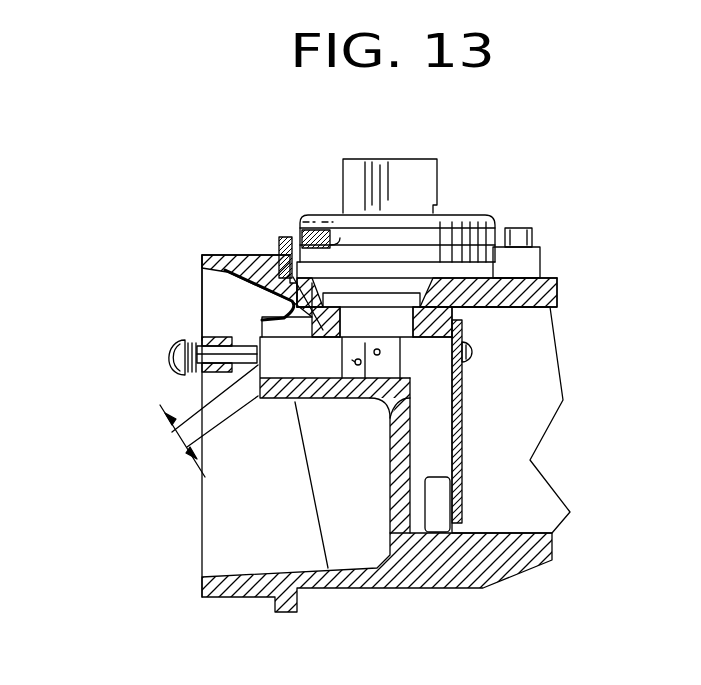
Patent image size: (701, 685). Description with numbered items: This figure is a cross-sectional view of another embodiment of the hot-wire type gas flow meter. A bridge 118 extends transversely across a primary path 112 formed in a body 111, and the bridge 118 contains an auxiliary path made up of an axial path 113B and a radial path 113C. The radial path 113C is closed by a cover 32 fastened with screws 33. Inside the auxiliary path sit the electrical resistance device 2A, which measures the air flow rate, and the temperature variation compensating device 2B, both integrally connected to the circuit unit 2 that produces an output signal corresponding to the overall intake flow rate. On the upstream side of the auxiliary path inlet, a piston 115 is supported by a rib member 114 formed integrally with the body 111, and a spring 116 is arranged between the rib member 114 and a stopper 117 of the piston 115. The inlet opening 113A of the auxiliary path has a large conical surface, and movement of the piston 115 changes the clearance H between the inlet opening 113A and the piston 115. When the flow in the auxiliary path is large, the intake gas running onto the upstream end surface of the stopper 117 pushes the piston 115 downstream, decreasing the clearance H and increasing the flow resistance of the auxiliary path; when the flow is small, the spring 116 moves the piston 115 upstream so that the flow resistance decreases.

The circuit unit 2 is at (335, 215).
The electrical resistance device 2A is at (313, 360).
The temperature variation compensating device 2B is at (374, 358).
The cover 32 is at (465, 465).
The screws 33 is at (478, 355).
The body 111 is at (500, 573).
The primary path 112 is at (215, 545).
The inlet opening 113A is at (257, 383).
The axial path 113B is at (305, 325).
The radial path 113C is at (433, 423).
The rib member 114 is at (200, 312).
The piston 115 is at (232, 318).
The spring 116 is at (188, 343).
The stopper 117 is at (160, 357).
The bridge 118 is at (395, 505).
The clearance H is at (183, 436).